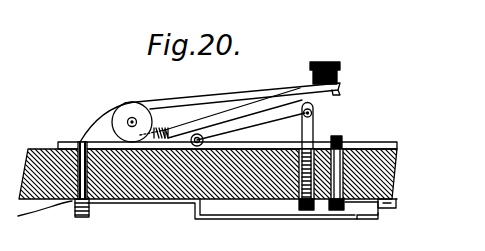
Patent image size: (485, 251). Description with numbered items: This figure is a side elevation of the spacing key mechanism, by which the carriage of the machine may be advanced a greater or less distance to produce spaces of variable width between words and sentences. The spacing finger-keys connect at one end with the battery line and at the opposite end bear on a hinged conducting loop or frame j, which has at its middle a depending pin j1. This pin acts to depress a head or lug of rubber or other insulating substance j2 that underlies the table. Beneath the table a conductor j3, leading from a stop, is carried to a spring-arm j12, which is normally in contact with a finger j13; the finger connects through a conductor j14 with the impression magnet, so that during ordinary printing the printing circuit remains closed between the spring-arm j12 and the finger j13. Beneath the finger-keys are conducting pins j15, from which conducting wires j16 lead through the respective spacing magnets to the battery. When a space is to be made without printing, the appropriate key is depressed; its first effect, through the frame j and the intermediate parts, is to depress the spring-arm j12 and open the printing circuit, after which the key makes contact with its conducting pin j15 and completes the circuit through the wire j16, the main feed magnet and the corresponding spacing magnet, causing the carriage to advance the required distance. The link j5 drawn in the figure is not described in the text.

The hinged conducting loop or frame j is at (232, 88).
The depending pin j1 is at (310, 133).
The head or lug of insulating substance j2 is at (300, 205).
The conductor j3 is at (167, 203).
The connecting link j5 is at (233, 113).
The spring-arm j12 is at (213, 219).
The finger j13 is at (384, 211).
The conductor j14 is at (397, 202).
The conducting pins j15 is at (342, 138).
The conducting wires j16 is at (376, 213).